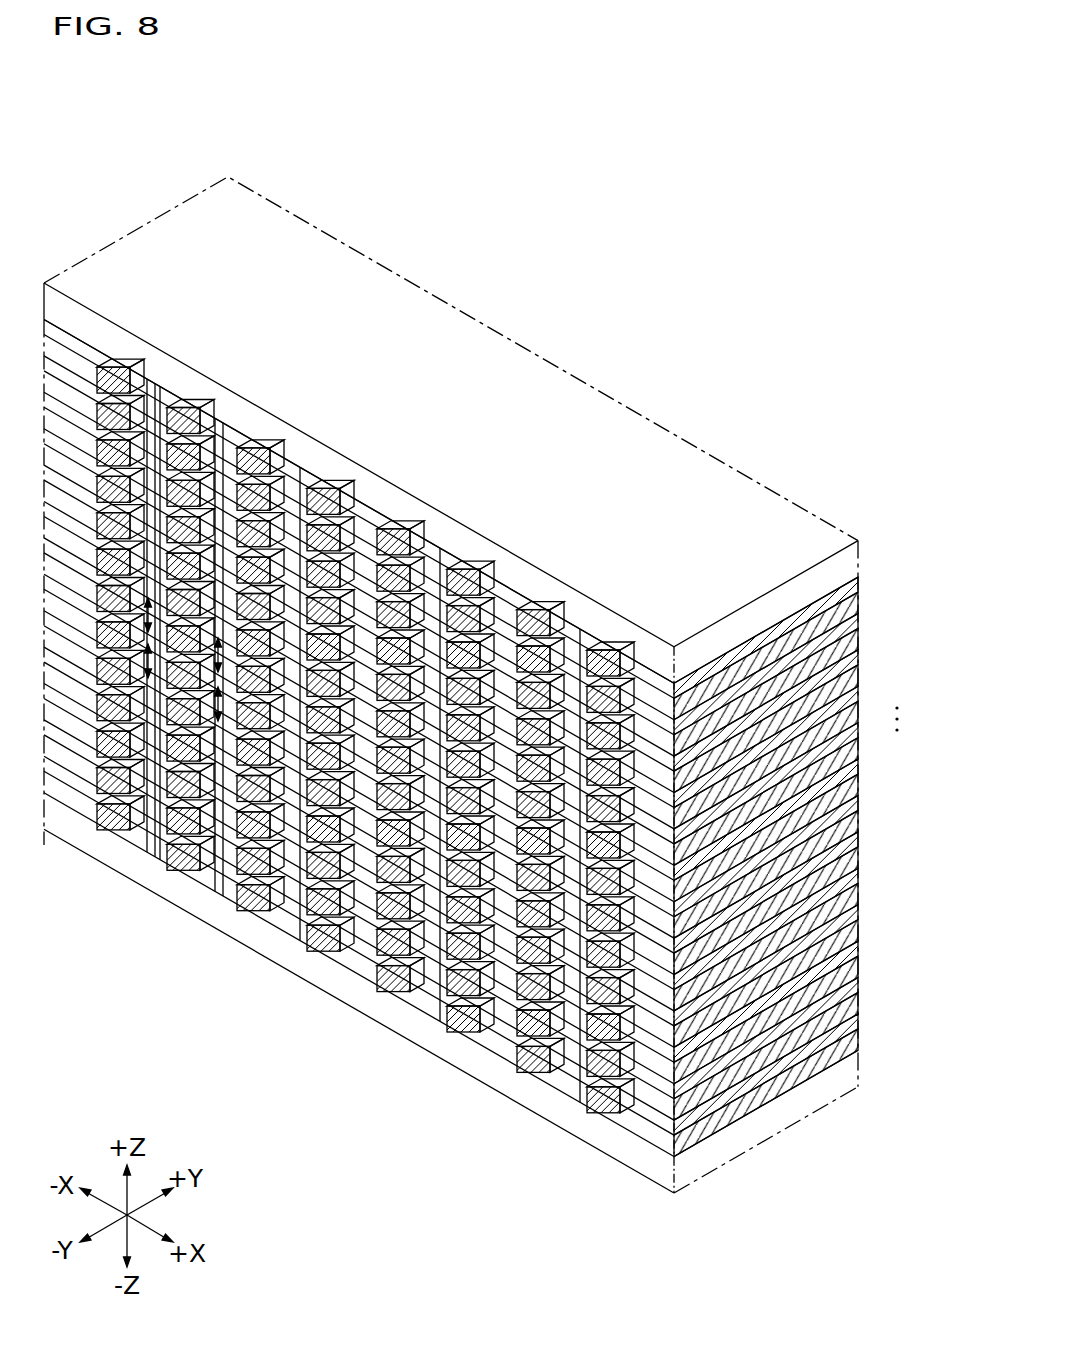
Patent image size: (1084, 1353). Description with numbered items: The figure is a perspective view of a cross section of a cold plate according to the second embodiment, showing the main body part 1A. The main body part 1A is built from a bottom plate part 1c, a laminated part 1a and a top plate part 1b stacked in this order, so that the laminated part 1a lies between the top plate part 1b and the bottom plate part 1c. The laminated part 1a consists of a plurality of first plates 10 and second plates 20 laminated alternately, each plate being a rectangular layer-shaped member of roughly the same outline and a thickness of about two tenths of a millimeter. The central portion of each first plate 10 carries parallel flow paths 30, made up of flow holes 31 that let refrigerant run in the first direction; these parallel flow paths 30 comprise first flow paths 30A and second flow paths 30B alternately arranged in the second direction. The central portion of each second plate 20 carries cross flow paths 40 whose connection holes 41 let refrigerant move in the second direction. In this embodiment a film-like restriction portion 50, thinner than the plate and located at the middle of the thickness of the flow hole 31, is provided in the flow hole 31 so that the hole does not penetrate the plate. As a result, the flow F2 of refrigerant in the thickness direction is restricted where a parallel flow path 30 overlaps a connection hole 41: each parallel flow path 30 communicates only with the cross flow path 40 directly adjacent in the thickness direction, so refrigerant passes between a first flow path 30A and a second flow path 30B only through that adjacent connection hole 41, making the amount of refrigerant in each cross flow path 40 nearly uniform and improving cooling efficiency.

The main body part 1A is at (505, 690).
The laminated part 1a is at (505, 738).
The top plate part 1b is at (832, 571).
The bottom plate part 1c is at (828, 1087).
The first plate 10 is at (850, 620).
The second plate 20 is at (480, 738).
The parallel flow path 30 is at (400, 837).
The flow hole 31 is at (400, 837).
The first flow path 30A is at (364, 735).
The second flow path 30B is at (360, 705).
The cross flow path 40 is at (348, 715).
The connection hole 41 is at (543, 830).
The restriction portion 50 is at (147, 580).
The flow F2 is at (149, 596).